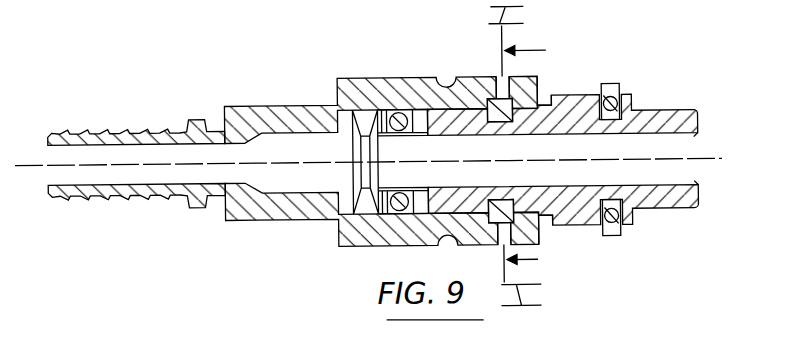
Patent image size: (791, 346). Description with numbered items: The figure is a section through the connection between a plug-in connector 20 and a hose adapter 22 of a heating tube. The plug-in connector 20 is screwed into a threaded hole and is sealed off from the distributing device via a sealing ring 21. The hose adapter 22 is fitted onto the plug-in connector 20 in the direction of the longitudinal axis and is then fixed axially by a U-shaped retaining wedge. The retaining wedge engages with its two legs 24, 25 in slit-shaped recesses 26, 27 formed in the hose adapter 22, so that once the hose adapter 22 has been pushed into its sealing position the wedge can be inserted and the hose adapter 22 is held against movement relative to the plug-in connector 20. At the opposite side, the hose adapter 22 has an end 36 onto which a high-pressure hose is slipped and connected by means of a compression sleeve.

The plug-in connector 20 is at (589, 97).
The sealing ring 21 is at (627, 116).
The hose adapter 22 is at (347, 240).
The leg 24 is at (519, 216).
The leg 25 is at (542, 89).
The slit-shaped recess 26 is at (504, 208).
The slit-shaped recess 27 is at (488, 79).
The end 36 is at (109, 130).